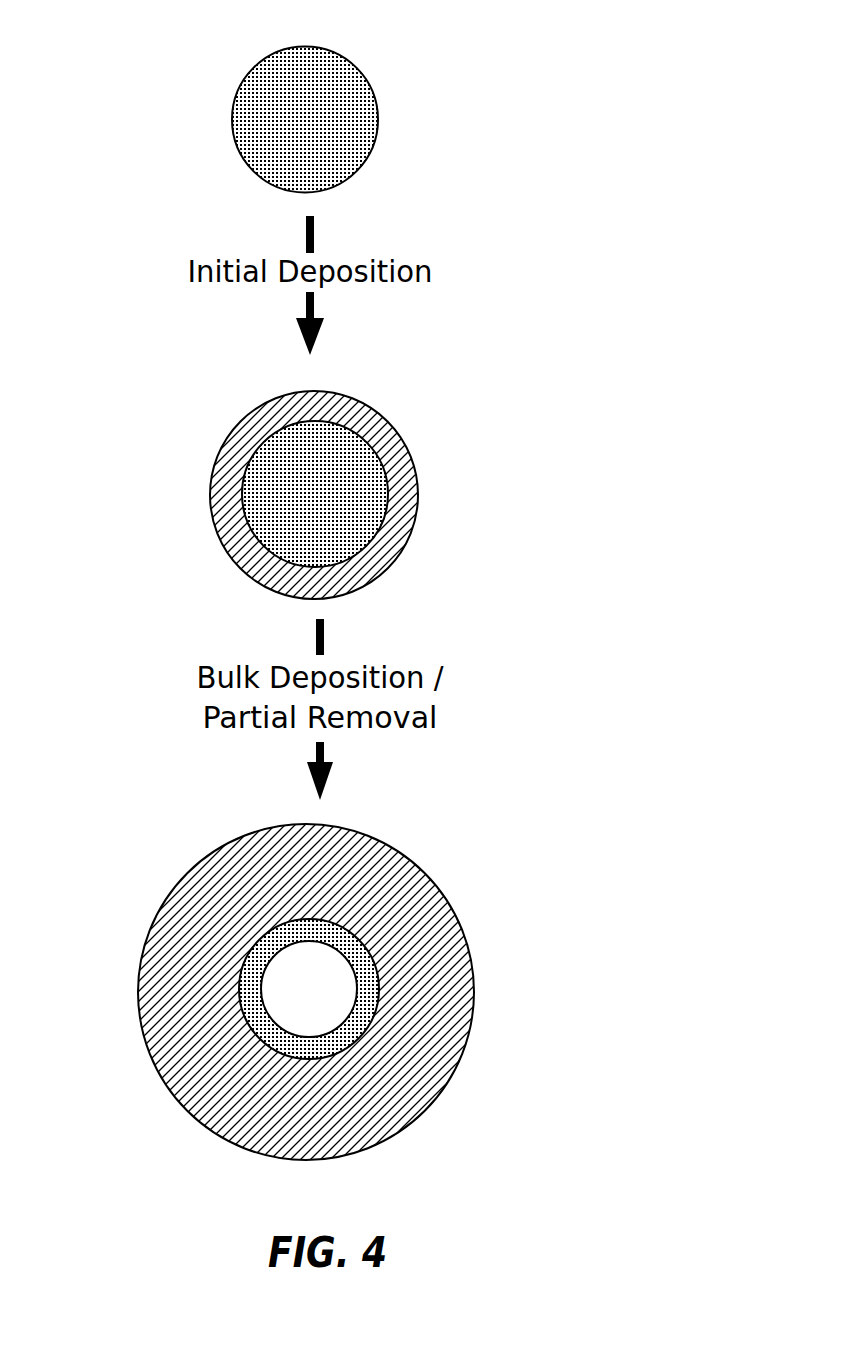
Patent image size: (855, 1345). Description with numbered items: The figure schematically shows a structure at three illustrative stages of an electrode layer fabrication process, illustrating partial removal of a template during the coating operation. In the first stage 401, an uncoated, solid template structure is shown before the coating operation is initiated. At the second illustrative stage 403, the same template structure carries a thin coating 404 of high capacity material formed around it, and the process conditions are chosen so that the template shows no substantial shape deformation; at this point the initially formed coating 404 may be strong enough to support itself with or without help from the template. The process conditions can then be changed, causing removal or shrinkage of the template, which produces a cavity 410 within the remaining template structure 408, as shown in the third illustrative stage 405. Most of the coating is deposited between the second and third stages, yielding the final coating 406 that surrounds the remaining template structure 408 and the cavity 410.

The first stage 401 is at (276, 101).
The second illustrative stage 403 is at (284, 469).
The thin coating 404 is at (232, 430).
The third illustrative stage 405 is at (276, 961).
The final coating 406 is at (240, 923).
The remaining template structure 408 is at (240, 980).
The cavity 410 is at (297, 997).